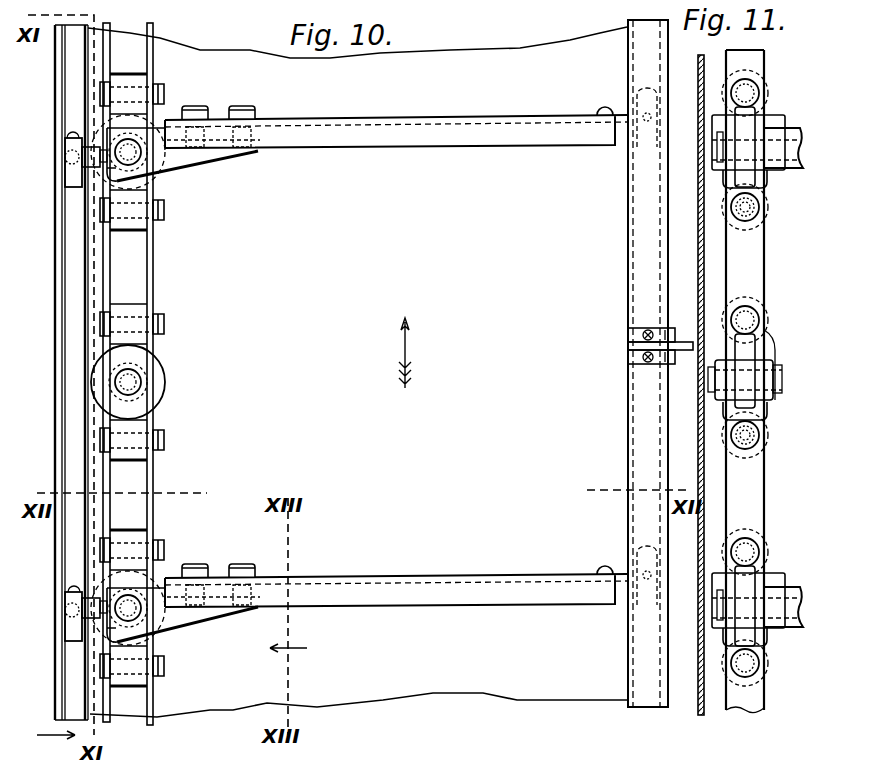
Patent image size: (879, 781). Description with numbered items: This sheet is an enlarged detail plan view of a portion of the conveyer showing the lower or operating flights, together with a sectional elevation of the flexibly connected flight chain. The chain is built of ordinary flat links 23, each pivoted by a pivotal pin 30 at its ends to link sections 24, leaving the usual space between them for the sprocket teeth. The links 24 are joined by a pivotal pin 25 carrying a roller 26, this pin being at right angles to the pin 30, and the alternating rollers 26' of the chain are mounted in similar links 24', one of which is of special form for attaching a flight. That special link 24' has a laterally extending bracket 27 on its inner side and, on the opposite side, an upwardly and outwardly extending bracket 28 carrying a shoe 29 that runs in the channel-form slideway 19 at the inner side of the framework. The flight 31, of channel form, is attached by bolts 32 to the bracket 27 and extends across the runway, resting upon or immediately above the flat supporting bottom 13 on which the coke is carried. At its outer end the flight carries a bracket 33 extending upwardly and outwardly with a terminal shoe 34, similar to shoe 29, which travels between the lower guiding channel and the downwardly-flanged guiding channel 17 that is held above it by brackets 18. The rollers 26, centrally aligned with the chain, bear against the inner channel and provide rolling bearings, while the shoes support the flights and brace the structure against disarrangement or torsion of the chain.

In FIG. 11, the supporting bottom 13 is at (697, 690).
In FIG. 10, the guiding channel 17 is at (640, 238).
In FIG. 10, the bracket 18 is at (675, 365).
In FIG. 10, the slideway 19 is at (68, 420).
In FIG. 10, the flat link 23 is at (151, 276).
In FIG. 11, the flat link 23 is at (745, 381).
In FIG. 10, the link section 24 is at (158, 320).
In FIG. 11, the link section 24 is at (763, 319).
In FIG. 10, the special link 24' is at (165, 438).
In FIG. 11, the special link 24' is at (762, 442).
In FIG. 10, the pivotal pin 25 is at (131, 157).
In FIG. 10, the roller 26 is at (172, 382).
In FIG. 11, the roller 26 is at (756, 375).
In FIG. 10, the alternating roller 26' is at (91, 397).
In FIG. 11, the alternating roller 26' is at (761, 380).
In FIG. 10, the laterally extending bracket 27 is at (222, 158).
In FIG. 10, the upwardly and outwardly extending bracket 28 is at (80, 156).
In FIG. 10, the shoe 29 is at (72, 177).
In FIG. 10, the pivotal pin 30 is at (100, 213).
In FIG. 11, the pivotal pin 30 is at (742, 209).
In FIG. 10, the flight 31 is at (396, 361).
In FIG. 11, the flight 31 is at (717, 120).
In FIG. 10, the bolt 32 is at (245, 106).
In FIG. 10, the bracket 33 is at (606, 108).
In FIG. 10, the terminal shoe 34 is at (636, 144).